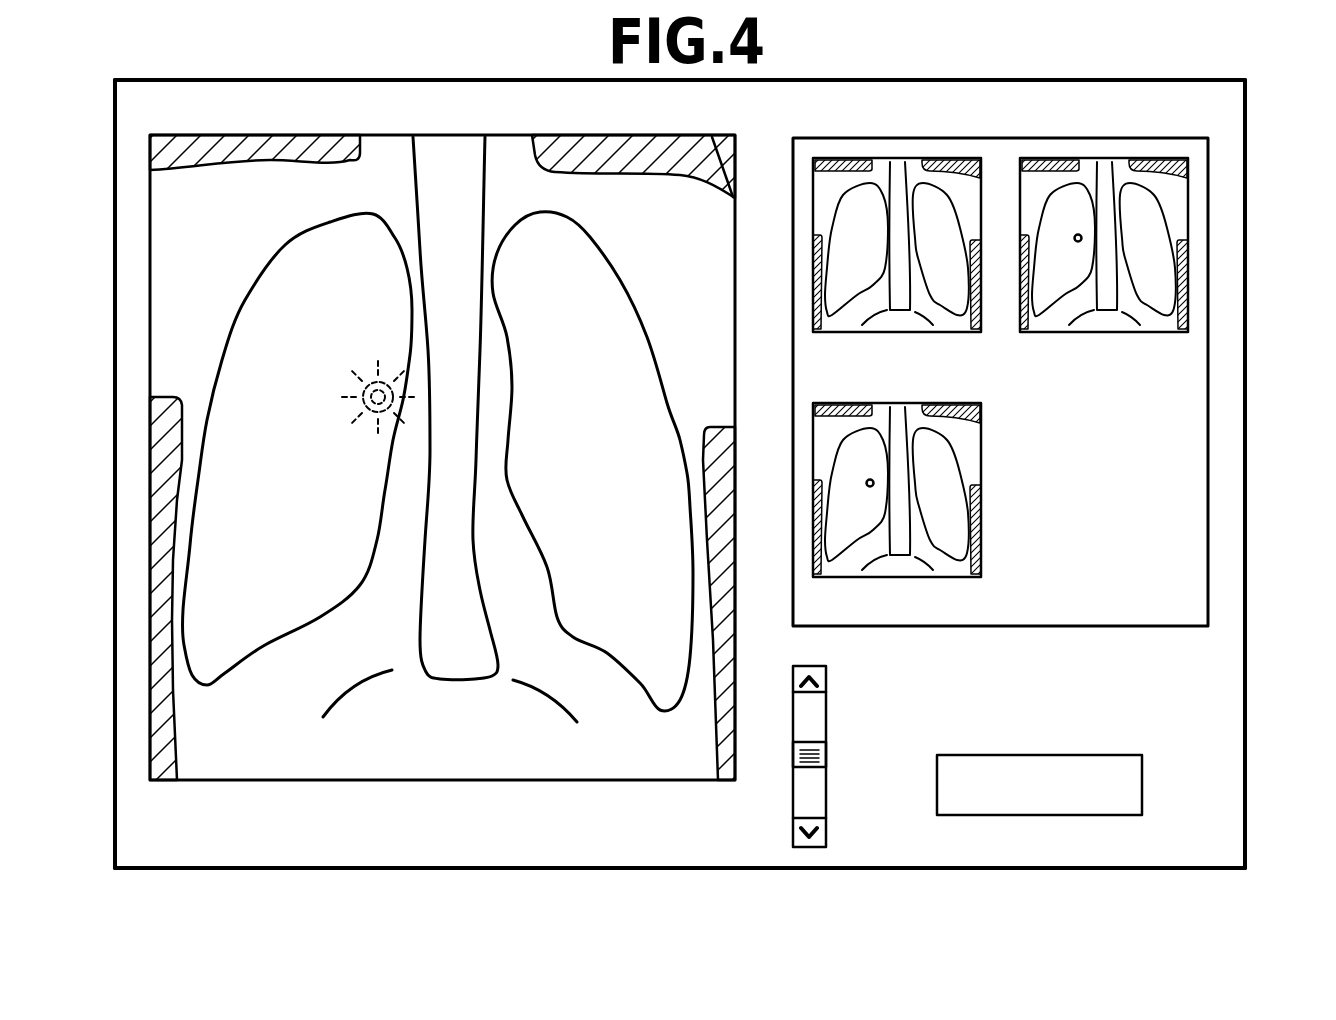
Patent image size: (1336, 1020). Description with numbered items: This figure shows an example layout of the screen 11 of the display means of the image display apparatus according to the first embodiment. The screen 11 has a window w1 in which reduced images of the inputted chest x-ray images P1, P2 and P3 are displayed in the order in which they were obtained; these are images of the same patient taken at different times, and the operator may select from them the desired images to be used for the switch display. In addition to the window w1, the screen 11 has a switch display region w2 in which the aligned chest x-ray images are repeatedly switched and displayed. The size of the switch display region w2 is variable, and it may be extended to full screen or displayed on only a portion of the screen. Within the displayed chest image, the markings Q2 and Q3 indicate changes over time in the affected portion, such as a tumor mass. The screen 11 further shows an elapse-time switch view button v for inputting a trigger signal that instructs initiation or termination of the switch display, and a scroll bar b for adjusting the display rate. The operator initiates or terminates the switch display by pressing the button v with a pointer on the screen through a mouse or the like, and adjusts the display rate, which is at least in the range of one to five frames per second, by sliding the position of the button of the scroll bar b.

The screen 11 is at (1183, 80).
The window w1 is at (1247, 122).
The switch display region w2 is at (150, 153).
The change over time in affected portion Q2 is at (368, 405).
The change over time in affected portion Q3 is at (370, 408).
The chest x-ray image P1 is at (946, 160).
The chest x-ray image P2 is at (1152, 160).
The chest x-ray image P3 is at (948, 403).
The scroll bar b is at (813, 848).
The elapse-time switch view button v is at (1143, 776).